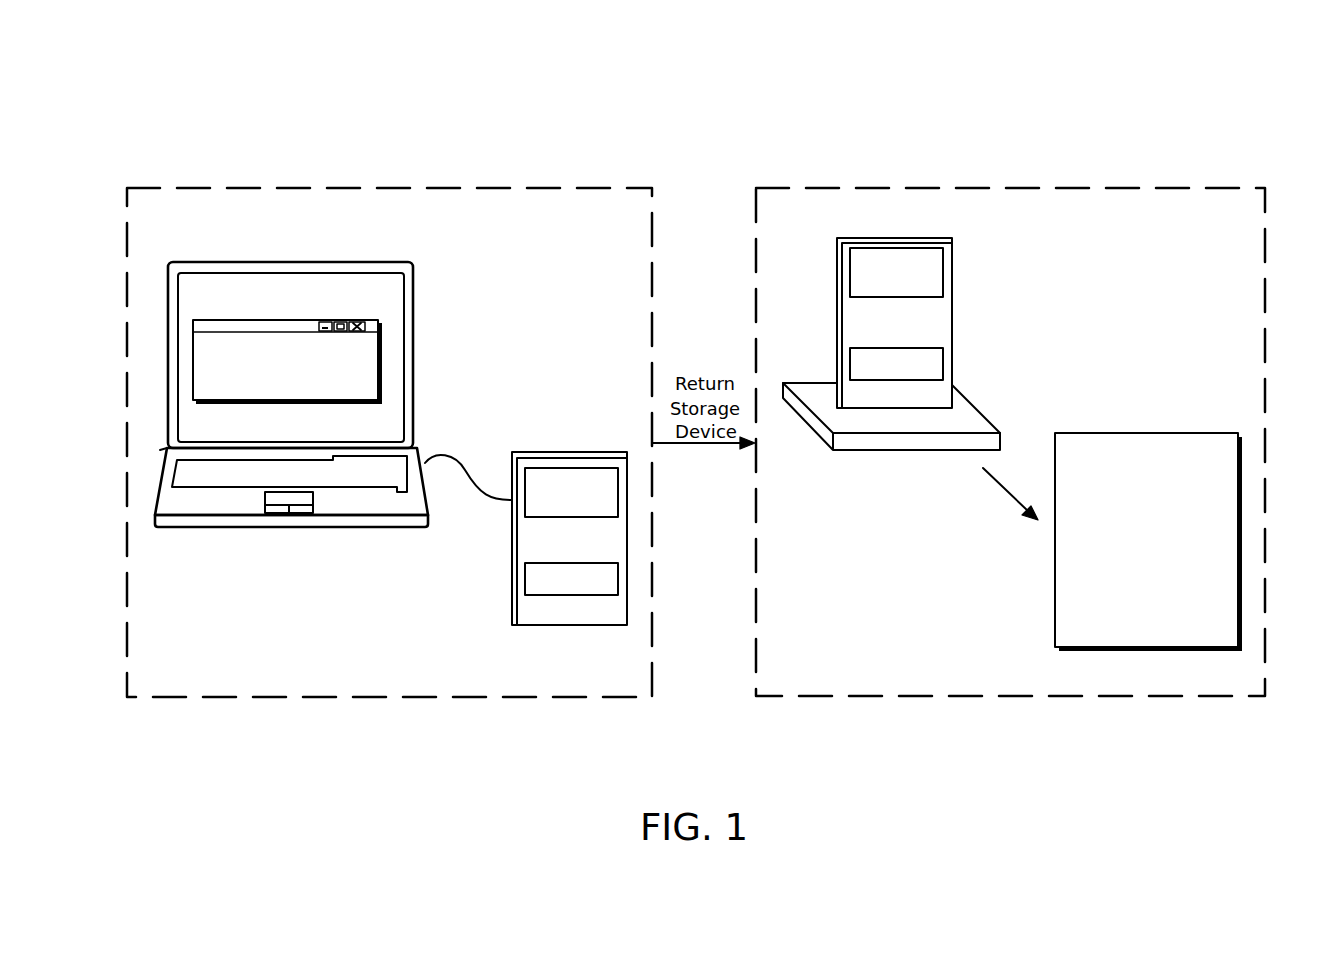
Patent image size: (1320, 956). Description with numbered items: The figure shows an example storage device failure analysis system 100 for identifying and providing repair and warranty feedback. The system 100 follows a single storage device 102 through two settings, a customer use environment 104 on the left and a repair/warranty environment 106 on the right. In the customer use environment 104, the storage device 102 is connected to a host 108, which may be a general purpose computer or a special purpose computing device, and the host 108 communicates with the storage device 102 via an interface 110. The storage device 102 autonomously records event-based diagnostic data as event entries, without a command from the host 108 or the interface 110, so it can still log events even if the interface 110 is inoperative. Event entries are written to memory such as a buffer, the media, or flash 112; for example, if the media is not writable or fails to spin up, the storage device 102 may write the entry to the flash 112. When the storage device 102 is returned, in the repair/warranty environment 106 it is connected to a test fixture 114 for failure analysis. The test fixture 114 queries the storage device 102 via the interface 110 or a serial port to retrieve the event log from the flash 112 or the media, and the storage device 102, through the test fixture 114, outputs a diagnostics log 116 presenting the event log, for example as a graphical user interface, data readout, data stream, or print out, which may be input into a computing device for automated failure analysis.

The storage device failure analysis system 100 is at (297, 74).
The storage device 102 is at (573, 452).
The customer use environment 104 is at (220, 681).
The repair/warranty environment 106 is at (855, 685).
The host 108 is at (413, 333).
The interface 110 is at (618, 495).
The flash 112 is at (525, 579).
The test fixture 114 is at (980, 408).
The diagnostics log 116 is at (1055, 583).